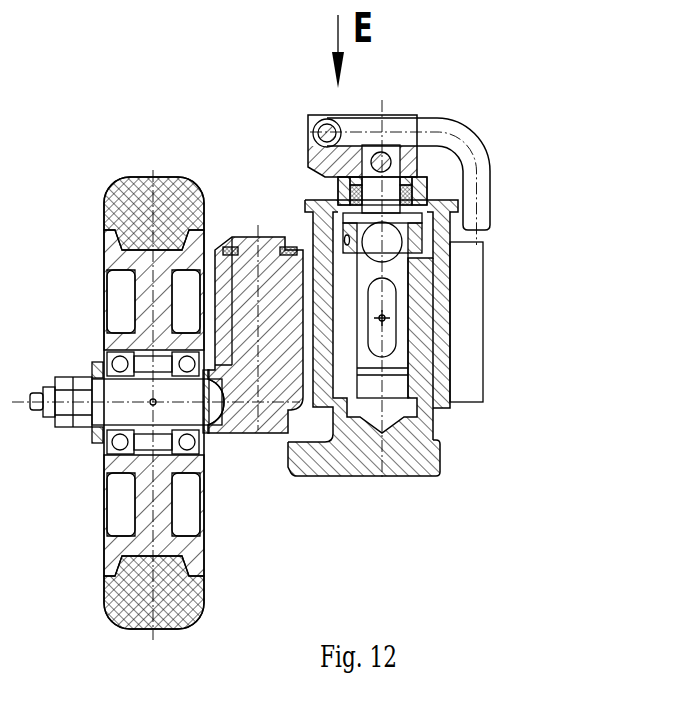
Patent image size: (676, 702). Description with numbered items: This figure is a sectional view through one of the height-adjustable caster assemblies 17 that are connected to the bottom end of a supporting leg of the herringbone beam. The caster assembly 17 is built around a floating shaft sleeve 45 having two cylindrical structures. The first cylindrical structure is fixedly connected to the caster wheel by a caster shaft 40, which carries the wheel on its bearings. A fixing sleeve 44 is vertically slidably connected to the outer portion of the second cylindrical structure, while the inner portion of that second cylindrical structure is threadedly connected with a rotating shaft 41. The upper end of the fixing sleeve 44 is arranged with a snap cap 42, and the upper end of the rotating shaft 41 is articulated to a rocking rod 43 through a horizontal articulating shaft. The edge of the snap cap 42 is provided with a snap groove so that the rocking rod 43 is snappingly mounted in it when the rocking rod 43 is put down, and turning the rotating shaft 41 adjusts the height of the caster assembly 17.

The caster assembly 17 is at (153, 182).
The caster shaft 40 is at (247, 248).
The rotating shaft 41 is at (387, 202).
The snap cap 42 is at (437, 203).
The rocking rod 43 is at (473, 207).
The fixing sleeve 44 is at (437, 342).
The floating shaft sleeve 45 is at (413, 452).